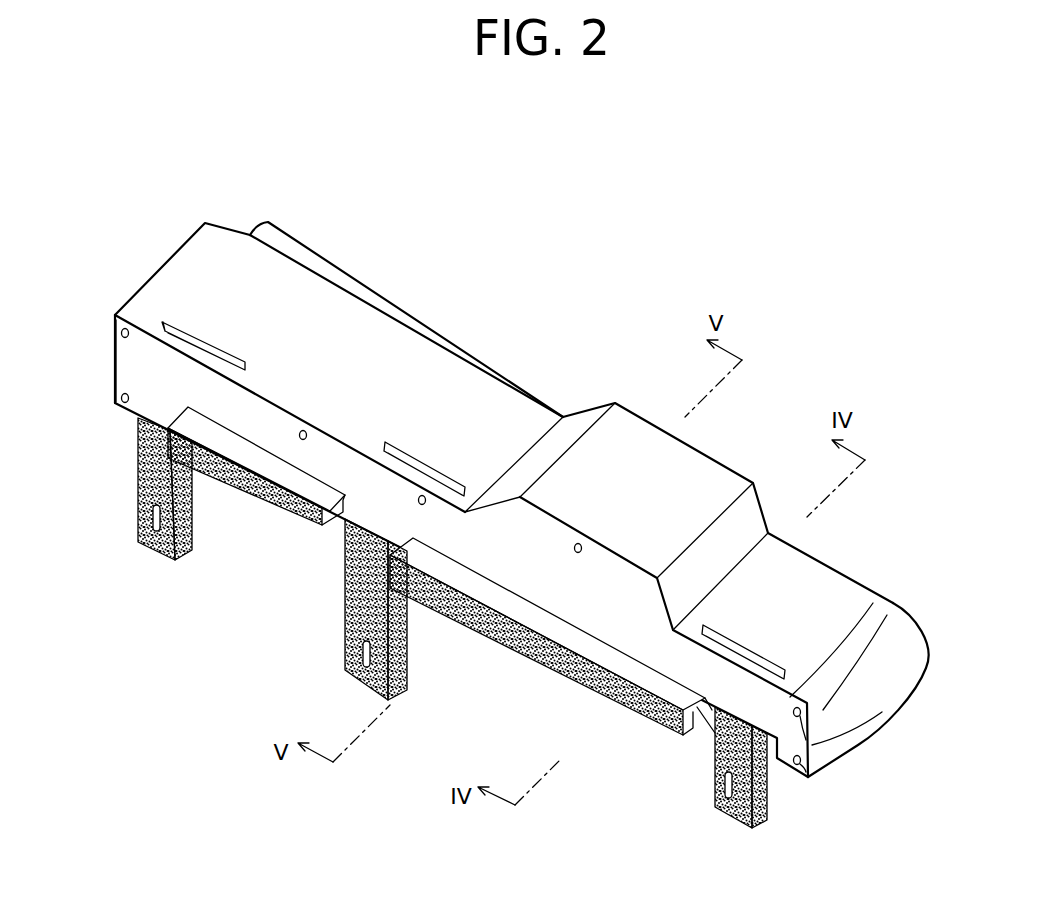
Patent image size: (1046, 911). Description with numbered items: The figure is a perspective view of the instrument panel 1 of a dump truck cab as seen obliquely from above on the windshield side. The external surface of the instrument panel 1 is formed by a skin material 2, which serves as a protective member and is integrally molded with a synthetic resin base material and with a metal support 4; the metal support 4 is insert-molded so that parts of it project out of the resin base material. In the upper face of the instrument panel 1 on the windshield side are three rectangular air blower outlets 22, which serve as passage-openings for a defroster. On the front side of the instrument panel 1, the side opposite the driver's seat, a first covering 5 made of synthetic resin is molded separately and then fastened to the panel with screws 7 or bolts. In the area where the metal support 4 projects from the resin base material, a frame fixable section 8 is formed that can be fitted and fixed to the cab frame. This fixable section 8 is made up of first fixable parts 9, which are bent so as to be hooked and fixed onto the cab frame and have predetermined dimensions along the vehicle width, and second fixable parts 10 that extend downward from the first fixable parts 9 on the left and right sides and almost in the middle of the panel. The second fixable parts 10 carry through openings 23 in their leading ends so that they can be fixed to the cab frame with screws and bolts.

The instrument panel 1 is at (303, 200).
The skin material 2 is at (217, 242).
The metal support 4 is at (138, 462).
The first covering 5 is at (135, 368).
The screws 7 is at (880, 727).
The frame fixable section 8 is at (253, 598).
The first fixable parts 9 is at (318, 512).
The second fixable parts 10 is at (163, 560).
The air blower outlets 22 is at (185, 330).
The through openings 23 is at (152, 520).